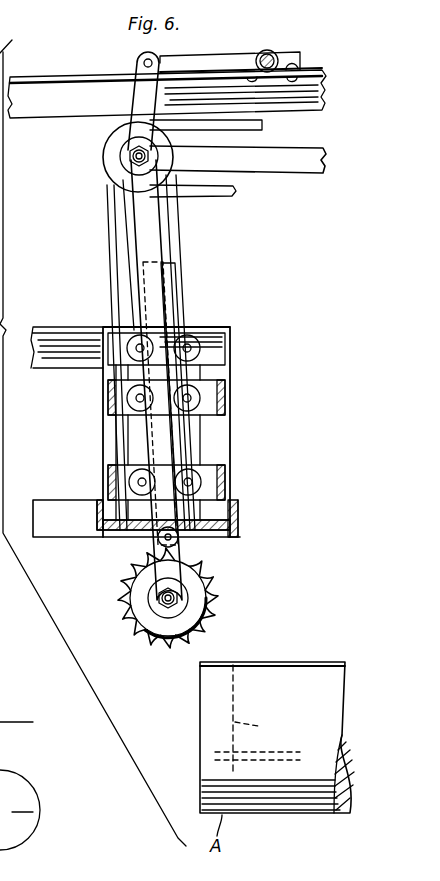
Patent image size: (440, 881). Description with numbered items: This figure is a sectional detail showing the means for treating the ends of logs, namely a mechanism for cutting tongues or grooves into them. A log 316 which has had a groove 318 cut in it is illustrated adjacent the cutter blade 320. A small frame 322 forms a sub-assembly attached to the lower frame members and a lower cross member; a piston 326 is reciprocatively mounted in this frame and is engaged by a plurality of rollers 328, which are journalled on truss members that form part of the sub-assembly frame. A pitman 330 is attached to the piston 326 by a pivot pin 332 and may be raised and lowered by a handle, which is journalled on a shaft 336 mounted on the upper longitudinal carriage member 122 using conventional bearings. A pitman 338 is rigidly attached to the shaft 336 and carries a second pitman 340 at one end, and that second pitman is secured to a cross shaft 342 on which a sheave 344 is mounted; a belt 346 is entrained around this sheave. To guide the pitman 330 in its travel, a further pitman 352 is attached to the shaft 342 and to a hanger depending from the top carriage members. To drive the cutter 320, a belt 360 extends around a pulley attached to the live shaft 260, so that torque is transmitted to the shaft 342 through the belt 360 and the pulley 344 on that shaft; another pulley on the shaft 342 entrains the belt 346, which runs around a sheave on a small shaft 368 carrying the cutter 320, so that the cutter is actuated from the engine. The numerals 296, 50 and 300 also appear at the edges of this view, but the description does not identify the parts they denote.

The upper longitudinal carriage member 122 is at (22, 92).
The shaft 336 is at (144, 63).
The pitman 338 is at (218, 62).
The second pitman 340 is at (148, 101).
The cross shaft 342 is at (131, 153).
The sheave 344 is at (112, 165).
The belt 346 is at (110, 223).
The pitman 330 is at (147, 231).
The piston 326 is at (175, 300).
The small frame 322 is at (83, 326).
The rollers 328 is at (200, 348).
The pivot pin 332 is at (183, 540).
The cutter blade 320 is at (218, 598).
The small shaft 368 is at (165, 604).
The belt 360 is at (262, 125).
The second pitman 352 is at (275, 167).
The log 316 is at (266, 668).
The groove 318 is at (257, 720).
The shaft 260 is at (20, 802).
The shaft 296 is at (39, 813).
The frame 50 is at (10, 605).
The member 300 is at (12, 872).